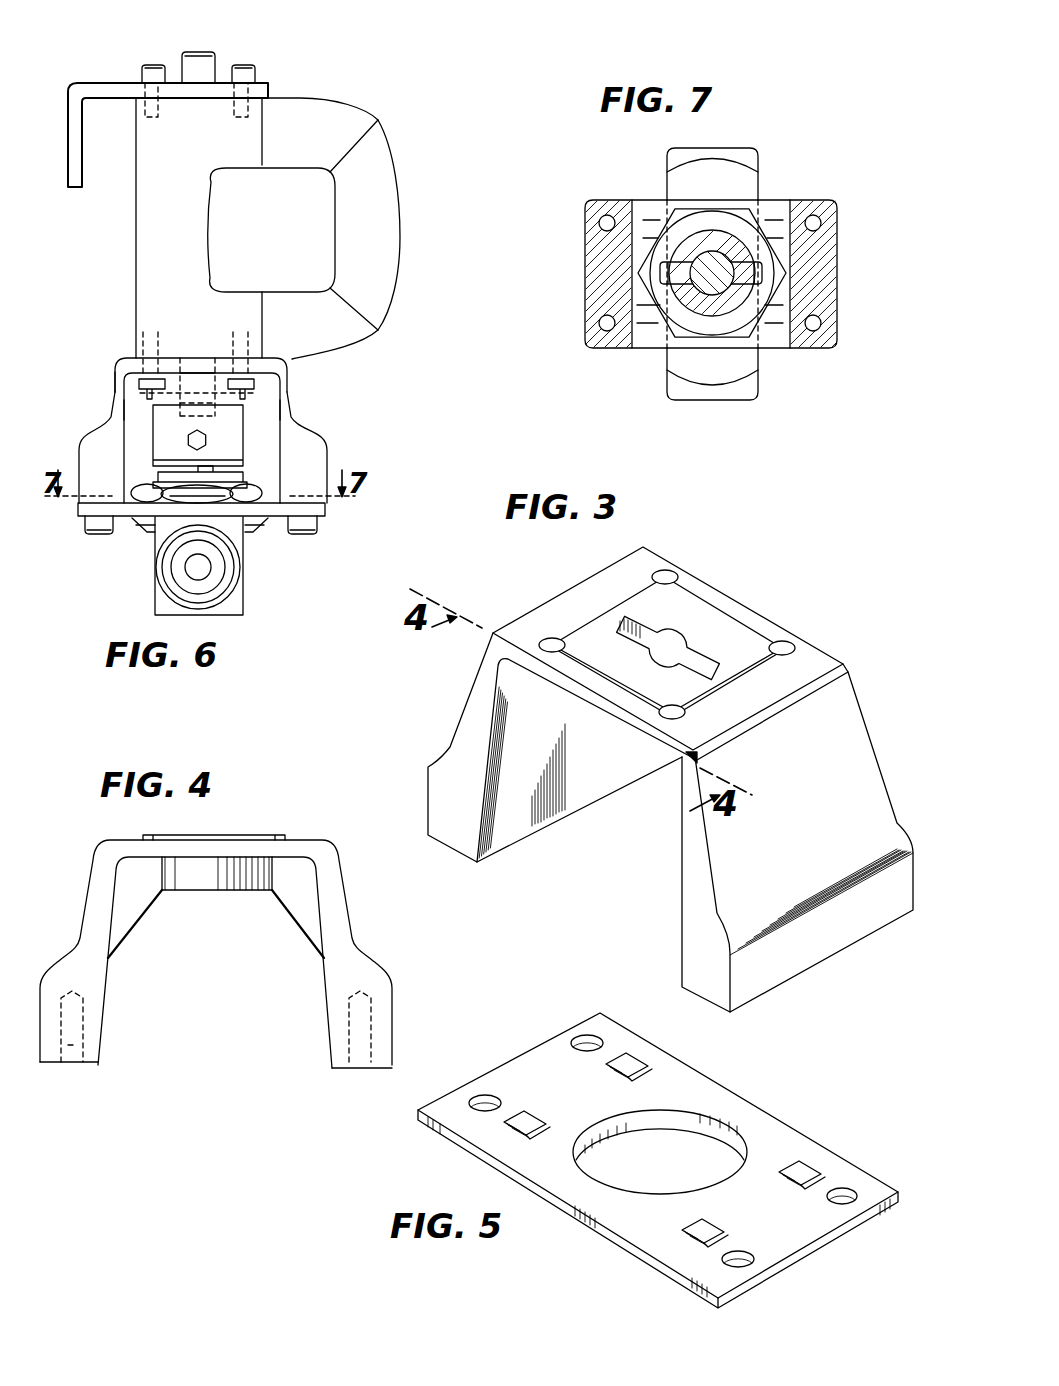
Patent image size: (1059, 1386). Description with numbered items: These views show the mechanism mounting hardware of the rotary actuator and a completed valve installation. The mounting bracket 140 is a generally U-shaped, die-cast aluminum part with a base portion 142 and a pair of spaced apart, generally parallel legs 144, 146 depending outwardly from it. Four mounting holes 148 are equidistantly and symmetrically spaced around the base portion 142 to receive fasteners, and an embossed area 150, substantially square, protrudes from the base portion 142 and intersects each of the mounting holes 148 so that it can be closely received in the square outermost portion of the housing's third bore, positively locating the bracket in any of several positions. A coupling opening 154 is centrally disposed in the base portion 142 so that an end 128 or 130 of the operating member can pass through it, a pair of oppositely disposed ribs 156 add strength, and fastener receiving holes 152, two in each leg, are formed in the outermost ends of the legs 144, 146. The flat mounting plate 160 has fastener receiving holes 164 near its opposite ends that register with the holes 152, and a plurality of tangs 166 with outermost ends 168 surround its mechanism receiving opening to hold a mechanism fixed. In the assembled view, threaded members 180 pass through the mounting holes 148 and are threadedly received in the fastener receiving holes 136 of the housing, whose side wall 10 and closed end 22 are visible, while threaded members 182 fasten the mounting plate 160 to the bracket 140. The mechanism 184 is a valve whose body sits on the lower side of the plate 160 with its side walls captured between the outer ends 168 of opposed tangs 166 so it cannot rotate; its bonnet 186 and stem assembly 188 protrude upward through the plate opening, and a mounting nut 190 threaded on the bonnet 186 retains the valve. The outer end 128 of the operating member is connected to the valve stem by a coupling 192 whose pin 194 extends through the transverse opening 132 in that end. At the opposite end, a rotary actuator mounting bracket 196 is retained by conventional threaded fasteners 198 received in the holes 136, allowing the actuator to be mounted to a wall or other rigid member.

In FIG. 6, the side wall 10 is at (386, 126).
In FIG. 6, the closed end 22 is at (326, 210).
In FIG. 6, the end of operating member 128 is at (121, 372).
In FIG. 6, the end of operating member 130 is at (203, 53).
In FIG. 7, the opening 132 is at (692, 257).
In FIG. 6, the threaded fastener receiving holes 136 is at (235, 116).
In FIG. 6, the mounting bracket 140 is at (354, 412).
In FIG. 3, the mounting bracket 140 is at (789, 602).
In FIG. 4, the mounting bracket 140 is at (358, 957).
In FIG. 6, the base portion 142 is at (282, 369).
In FIG. 3, the base portion 142 is at (706, 592).
In FIG. 6, the leg 144 is at (96, 453).
In FIG. 7, the leg 144 is at (596, 297).
In FIG. 3, the leg 144 is at (481, 691).
In FIG. 4, the leg 144 is at (86, 953).
In FIG. 6, the leg 146 is at (318, 432).
In FIG. 7, the leg 146 is at (827, 290).
In FIG. 3, the leg 146 is at (860, 749).
In FIG. 4, the leg 146 is at (340, 972).
In FIG. 3, the mounting holes 148 is at (549, 641).
In FIG. 3, the embossed area 150 is at (642, 609).
In FIG. 4, the embossed area 150 is at (270, 835).
In FIG. 7, the fastener receiving holes 152 is at (814, 226).
In FIG. 4, the fastener receiving holes 152 is at (80, 1037).
In FIG. 3, the coupling opening 154 is at (700, 645).
In FIG. 4, the ribs 156 is at (120, 925).
In FIG. 6, the mounting plate 160 is at (130, 540).
In FIG. 5, the mounting plate 160 is at (771, 1080).
In FIG. 5, the fastener receiving holes 164 is at (581, 1038).
In FIG. 6, the tangs 166 is at (258, 522).
In FIG. 7, the tangs 166 is at (652, 222).
In FIG. 5, the tangs 166 is at (612, 1066).
In FIG. 6, the outermost ends of tangs 168 is at (247, 560).
In FIG. 7, the outermost ends of tangs 168 is at (760, 224).
In FIG. 5, the outermost ends of tangs 168 is at (637, 1071).
In FIG. 6, the threaded members 180 is at (138, 386).
In FIG. 6, the threaded members 182 is at (316, 530).
In FIG. 6, the mechanism 184 is at (243, 605).
In FIG. 7, the mechanism 184 is at (750, 378).
In FIG. 6, the bonnet 186 is at (250, 486).
In FIG. 7, the bonnet 186 is at (727, 304).
In FIG. 6, the stem assembly 188 is at (158, 479).
In FIG. 6, the mounting nut 190 is at (190, 507).
In FIG. 7, the mounting nut 190 is at (668, 340).
In FIG. 6, the coupling 192 is at (232, 440).
In FIG. 6, the pin 194 is at (126, 416).
In FIG. 7, the pin 194 is at (770, 282).
In FIG. 6, the rotary actuator mounting bracket 196 is at (68, 182).
In FIG. 6, the threaded fasteners 198 is at (251, 66).